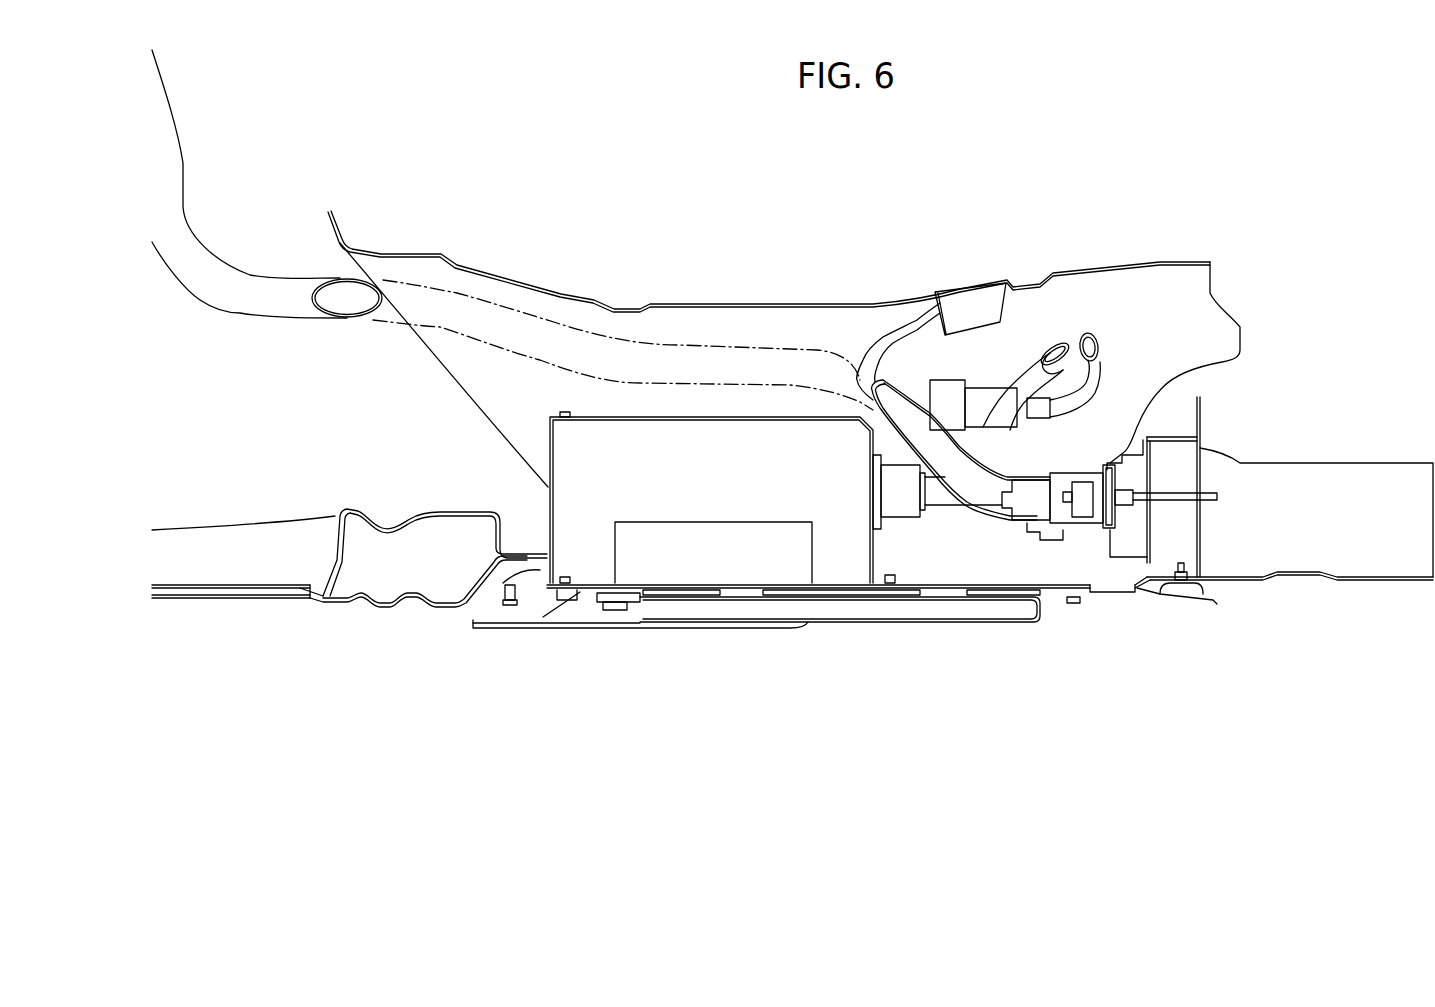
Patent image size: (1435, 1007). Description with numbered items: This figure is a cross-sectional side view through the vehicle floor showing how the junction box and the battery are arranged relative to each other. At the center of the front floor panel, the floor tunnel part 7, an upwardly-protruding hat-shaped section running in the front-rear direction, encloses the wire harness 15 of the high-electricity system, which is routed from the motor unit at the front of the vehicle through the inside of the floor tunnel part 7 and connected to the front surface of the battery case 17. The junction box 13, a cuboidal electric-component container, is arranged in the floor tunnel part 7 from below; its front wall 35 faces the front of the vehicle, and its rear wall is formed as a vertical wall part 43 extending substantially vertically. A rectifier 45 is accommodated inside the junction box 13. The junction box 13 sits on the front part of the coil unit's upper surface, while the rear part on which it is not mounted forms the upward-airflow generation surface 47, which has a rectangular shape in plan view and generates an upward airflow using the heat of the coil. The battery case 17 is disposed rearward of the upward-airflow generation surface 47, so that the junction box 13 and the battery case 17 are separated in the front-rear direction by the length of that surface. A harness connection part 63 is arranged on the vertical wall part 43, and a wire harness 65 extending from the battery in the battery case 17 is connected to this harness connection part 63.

The floor tunnel part 7 is at (712, 303).
The junction box 13 is at (600, 413).
The wire harness 15 is at (897, 393).
The battery case 17 is at (1283, 553).
The front wall 35 is at (543, 513).
The vertical wall part 43 is at (880, 575).
The rectifier 45 is at (708, 573).
The upward-airflow generation surface 47 is at (1043, 572).
The harness connection part 63 is at (902, 518).
The wire harness 65 is at (952, 507).